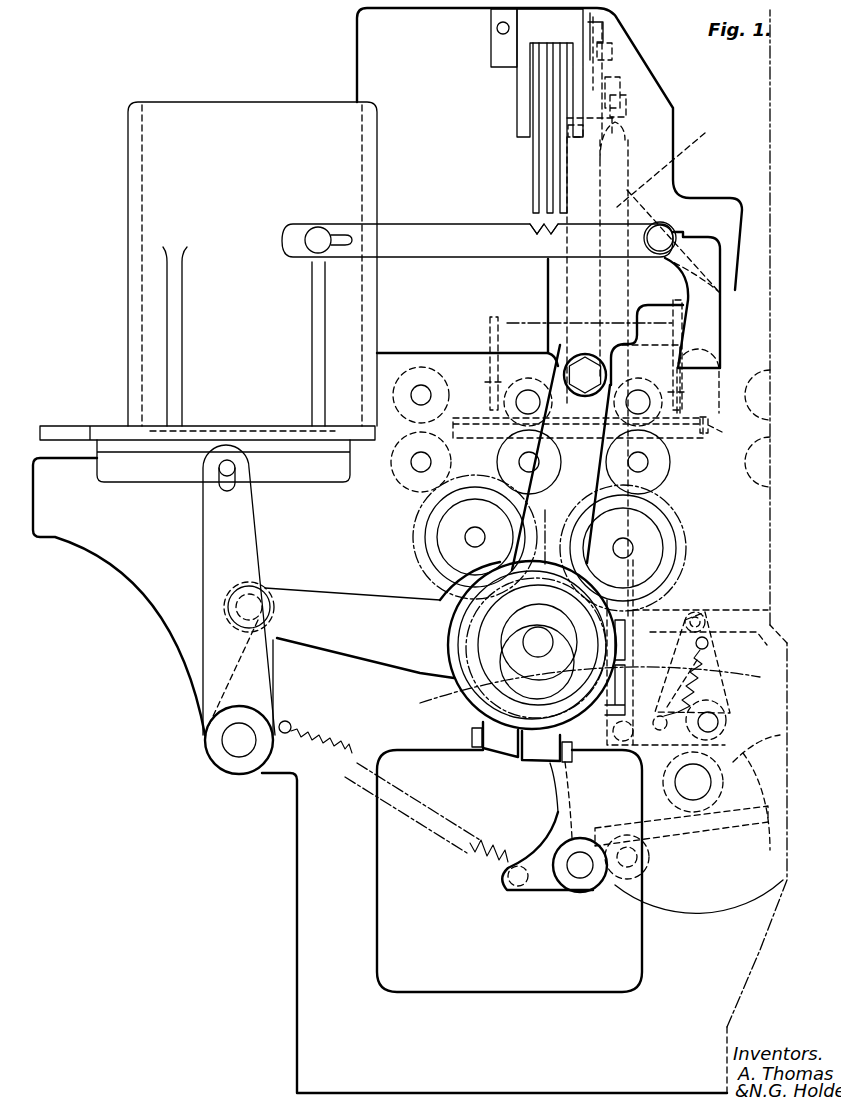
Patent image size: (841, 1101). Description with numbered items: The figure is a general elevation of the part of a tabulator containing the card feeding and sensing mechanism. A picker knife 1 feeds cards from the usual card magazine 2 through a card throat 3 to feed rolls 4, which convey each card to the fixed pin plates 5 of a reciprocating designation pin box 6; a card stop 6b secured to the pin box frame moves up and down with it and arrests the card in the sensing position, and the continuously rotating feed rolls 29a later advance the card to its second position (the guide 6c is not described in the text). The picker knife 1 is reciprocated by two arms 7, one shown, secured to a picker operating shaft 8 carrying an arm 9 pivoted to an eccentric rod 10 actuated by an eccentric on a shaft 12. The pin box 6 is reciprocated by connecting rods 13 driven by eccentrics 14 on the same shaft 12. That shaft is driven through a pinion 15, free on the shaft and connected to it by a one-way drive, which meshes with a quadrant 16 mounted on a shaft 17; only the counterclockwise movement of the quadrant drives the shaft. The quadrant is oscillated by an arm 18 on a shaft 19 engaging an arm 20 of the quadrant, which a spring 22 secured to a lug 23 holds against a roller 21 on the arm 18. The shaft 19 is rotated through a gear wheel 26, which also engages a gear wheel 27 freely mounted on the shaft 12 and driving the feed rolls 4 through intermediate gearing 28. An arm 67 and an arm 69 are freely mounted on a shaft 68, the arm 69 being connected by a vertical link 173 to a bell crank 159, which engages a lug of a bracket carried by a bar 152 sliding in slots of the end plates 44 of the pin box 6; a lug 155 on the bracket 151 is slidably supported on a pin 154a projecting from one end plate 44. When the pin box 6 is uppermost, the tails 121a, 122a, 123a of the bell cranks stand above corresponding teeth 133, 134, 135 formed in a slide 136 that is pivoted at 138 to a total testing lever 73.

The picker knife 1 is at (123, 423).
The card magazine 2 is at (217, 181).
The card throat 3 is at (362, 423).
The feed rolls 4 is at (421, 366).
The fixed pin plates 5 is at (480, 422).
The designation pin box 6 is at (577, 371).
The card stop 6b is at (586, 383).
The guide 6c is at (708, 388).
The arms 7 is at (225, 540).
The picker operating shaft 8 is at (233, 742).
The arm 9 is at (273, 663).
The eccentric rod 10 is at (300, 597).
The shaft 12 is at (532, 638).
The connecting rods 13 is at (582, 480).
The eccentrics 14 is at (520, 677).
The pinion 15 is at (445, 578).
The quadrant 16 is at (750, 744).
The shaft 17 is at (580, 872).
The arm 18 is at (648, 853).
The shaft 19 is at (700, 810).
The arm 20 is at (767, 820).
The roller 21 is at (625, 877).
The spring 22 is at (408, 807).
The lug 23 is at (510, 890).
The gear wheel 26 is at (660, 917).
The gear wheel 27 is at (553, 533).
The intermediate gearing 28 is at (425, 520).
The feed rolls 29a is at (726, 428).
The end plates 44 is at (380, 25).
The arm 67 is at (710, 643).
The shaft 68 is at (715, 695).
The arm 69 is at (626, 757).
The total testing lever 73 is at (703, 323).
The tail 121a is at (565, 188).
The tail 122a is at (551, 172).
The tail 123a is at (533, 148).
The tooth 133 is at (556, 230).
The tooth 134 is at (545, 230).
The tooth 135 is at (538, 229).
The slide 136 is at (432, 238).
The pivot 138 is at (672, 228).
The bracket 151 is at (537, 73).
The bar 152 is at (603, 21).
The pin 154a is at (497, 27).
The lug 155 is at (498, 50).
The bell crank 159 is at (613, 52).
The link 173 is at (637, 608).